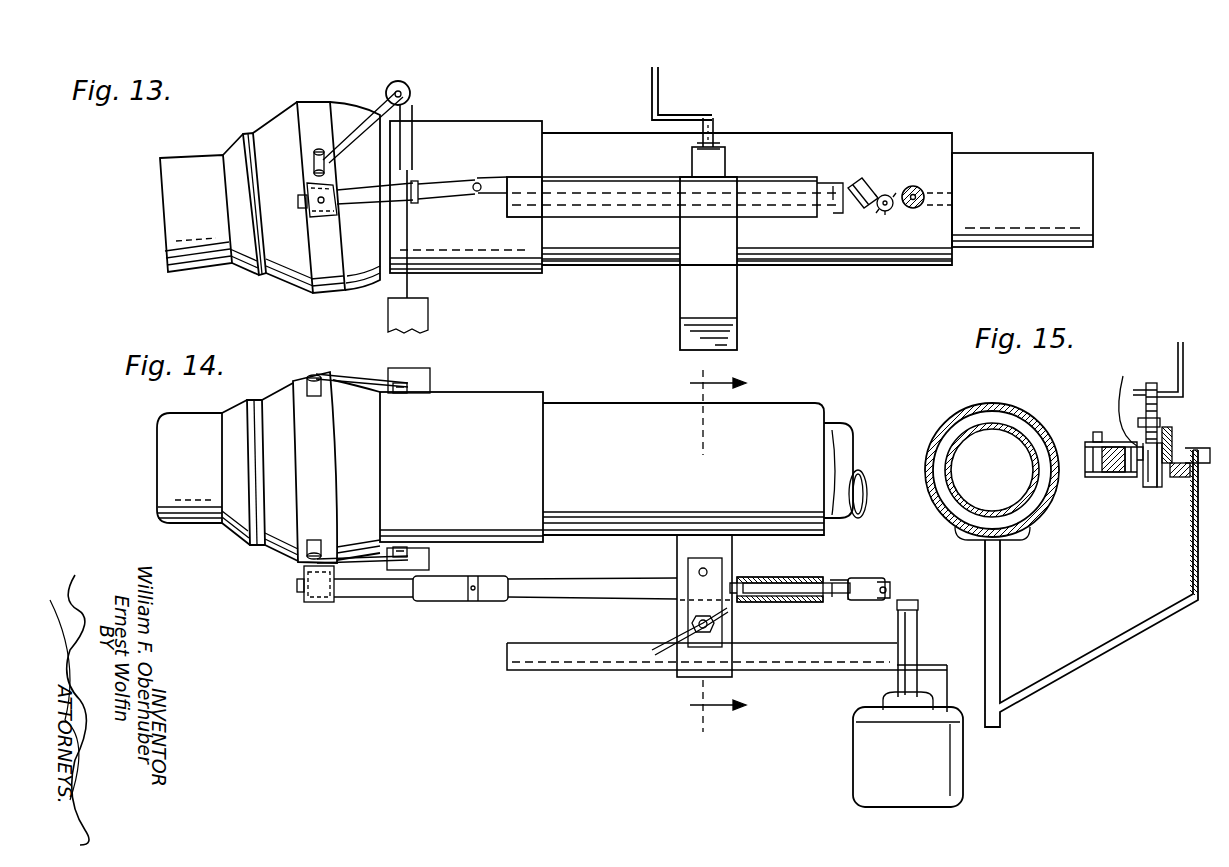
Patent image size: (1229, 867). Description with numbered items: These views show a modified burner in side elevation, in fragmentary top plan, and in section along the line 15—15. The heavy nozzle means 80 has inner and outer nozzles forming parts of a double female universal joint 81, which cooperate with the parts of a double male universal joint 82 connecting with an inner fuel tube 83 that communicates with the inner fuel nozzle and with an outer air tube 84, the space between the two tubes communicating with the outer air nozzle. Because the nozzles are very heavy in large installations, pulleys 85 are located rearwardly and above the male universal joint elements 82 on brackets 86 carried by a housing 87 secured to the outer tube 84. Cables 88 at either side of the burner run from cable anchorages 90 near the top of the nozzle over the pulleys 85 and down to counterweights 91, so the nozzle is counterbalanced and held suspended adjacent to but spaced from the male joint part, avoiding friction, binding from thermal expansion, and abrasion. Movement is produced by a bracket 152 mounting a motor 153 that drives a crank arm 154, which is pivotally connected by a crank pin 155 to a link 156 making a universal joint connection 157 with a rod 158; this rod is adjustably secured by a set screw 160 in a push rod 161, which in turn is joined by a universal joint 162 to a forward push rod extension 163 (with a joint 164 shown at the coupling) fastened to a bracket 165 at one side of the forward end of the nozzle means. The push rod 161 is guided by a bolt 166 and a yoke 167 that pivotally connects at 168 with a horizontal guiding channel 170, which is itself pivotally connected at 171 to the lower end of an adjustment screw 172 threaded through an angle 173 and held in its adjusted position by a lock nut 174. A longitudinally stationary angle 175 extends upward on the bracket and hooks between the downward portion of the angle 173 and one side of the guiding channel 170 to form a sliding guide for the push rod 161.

In FIG. 14, the section line 15 is at (731, 551).
In FIG. 13, the nozzle means 80 is at (196, 213).
In FIG. 14, the nozzle means 80 is at (189, 468).
In FIG. 13, the double female universal joint 81 is at (268, 197).
In FIG. 14, the double female universal joint 81 is at (260, 472).
In FIG. 13, the double male universal joint 82 is at (346, 105).
In FIG. 14, the double male universal joint 82 is at (336, 467).
In FIG. 13, the inner fuel tube 83 is at (1022, 200).
In FIG. 14, the inner fuel tube 83 is at (846, 457).
In FIG. 15, the inner fuel tube 83 is at (1010, 431).
In FIG. 13, the outer air tube 84 is at (836, 135).
In FIG. 14, the outer air tube 84 is at (683, 469).
In FIG. 15, the outer air tube 84 is at (1023, 414).
In FIG. 13, the pulleys 85 is at (405, 90).
In FIG. 14, the pulleys 85 is at (404, 394).
In FIG. 13, the brackets 86 is at (400, 127).
In FIG. 13, the housing 87 is at (466, 197).
In FIG. 14, the housing 87 is at (461, 467).
In FIG. 13, the cables 88 is at (352, 140).
In FIG. 14, the cables 88 is at (357, 378).
In FIG. 13, the cable anchorages 90 is at (320, 151).
In FIG. 14, the cable anchorages 90 is at (316, 376).
In FIG. 13, the counterweights 91 is at (430, 316).
In FIG. 14, the counterweights 91 is at (431, 378).
In FIG. 13, the bracket 152 is at (770, 187).
In FIG. 14, the bracket 152 is at (808, 650).
In FIG. 14, the motor 153 is at (862, 772).
In FIG. 13, the crank arm 154 is at (914, 186).
In FIG. 14, the crank arm 154 is at (910, 606).
In FIG. 13, the crank pin 155 is at (880, 211).
In FIG. 14, the crank pin 155 is at (878, 611).
In FIG. 13, the link 156 is at (884, 195).
In FIG. 14, the link 156 is at (880, 581).
In FIG. 13, the universal joint connection 157 is at (856, 183).
In FIG. 14, the universal joint connection 157 is at (856, 578).
In FIG. 13, the rod 158 is at (832, 183).
In FIG. 14, the rod 158 is at (832, 580).
In FIG. 14, the set screw 160 is at (812, 602).
In FIG. 14, the push rod 161 is at (757, 570).
In FIG. 15, the push rod 161 is at (1124, 478).
In FIG. 13, the universal joint 162 is at (482, 183).
In FIG. 14, the universal joint 162 is at (472, 601).
In FIG. 13, the forward push rod extension 163 is at (432, 190).
In FIG. 14, the forward push rod extension 163 is at (385, 600).
In FIG. 13, the joint 164 is at (420, 180).
In FIG. 13, the bracket 165 is at (319, 206).
In FIG. 14, the bracket 165 is at (318, 593).
In FIG. 14, the bolt 166 is at (700, 575).
In FIG. 15, the bolt 166 is at (1098, 432).
In FIG. 14, the yoke 167 is at (688, 567).
In FIG. 15, the yoke 167 is at (1108, 478).
In FIG. 15, the pivotal connection 168 is at (1150, 488).
In FIG. 15, the horizontal guiding channel 170 is at (1121, 400).
In FIG. 15, the pivotal connection 171 is at (1160, 488).
In FIG. 13, the adjustment screw 172 is at (716, 128).
In FIG. 14, the adjustment screw 172 is at (690, 645).
In FIG. 15, the adjustment screw 172 is at (1158, 408).
In FIG. 15, the angle 173 is at (1172, 452).
In FIG. 15, the lock nut 174 is at (1162, 422).
In FIG. 14, the longitudinally stationary angle 175 is at (725, 644).
In FIG. 15, the longitudinally stationary angle 175 is at (1104, 587).